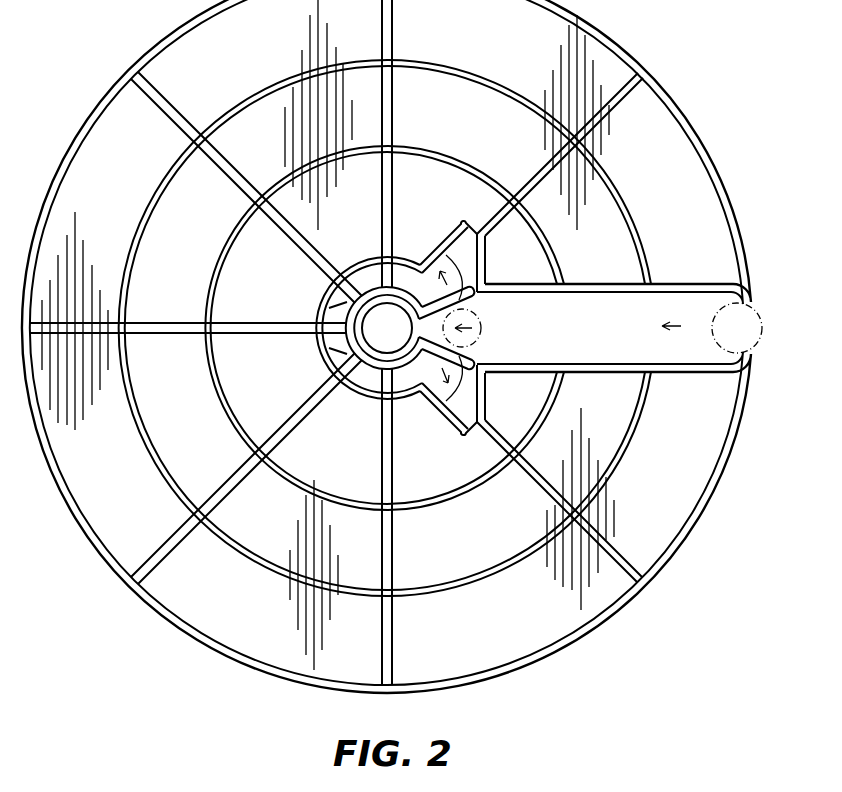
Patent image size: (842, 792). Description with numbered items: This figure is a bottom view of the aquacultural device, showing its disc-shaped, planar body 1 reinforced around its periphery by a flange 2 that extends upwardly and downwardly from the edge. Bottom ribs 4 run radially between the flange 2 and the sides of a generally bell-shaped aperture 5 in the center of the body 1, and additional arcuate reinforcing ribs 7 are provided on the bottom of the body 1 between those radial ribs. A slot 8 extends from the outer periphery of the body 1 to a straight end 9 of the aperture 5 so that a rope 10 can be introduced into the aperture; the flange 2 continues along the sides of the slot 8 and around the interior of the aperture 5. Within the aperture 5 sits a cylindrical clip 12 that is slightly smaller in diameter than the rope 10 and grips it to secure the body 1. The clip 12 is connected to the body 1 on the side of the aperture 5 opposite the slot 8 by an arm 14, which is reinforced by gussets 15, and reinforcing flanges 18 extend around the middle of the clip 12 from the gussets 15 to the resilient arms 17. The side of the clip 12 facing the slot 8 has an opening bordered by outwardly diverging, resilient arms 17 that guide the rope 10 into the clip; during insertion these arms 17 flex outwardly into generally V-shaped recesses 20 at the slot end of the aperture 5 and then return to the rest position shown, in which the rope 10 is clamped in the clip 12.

The body 1 is at (112, 624).
The flange 2 is at (527, 663).
The bottom ribs 4 is at (388, 98).
The aperture 5 is at (352, 377).
The arcuate reinforcing ribs 7 is at (141, 240).
The slot 8 is at (600, 291).
The straight end 9 is at (470, 397).
The rope 10 is at (482, 328).
The cylindrical clip 12 is at (383, 289).
The arm 14 is at (322, 327).
The gussets 15 is at (332, 305).
The resilient arms 17 is at (458, 268).
The reinforcing flanges 18 is at (375, 289).
The V-shaped recesses 20 is at (464, 222).